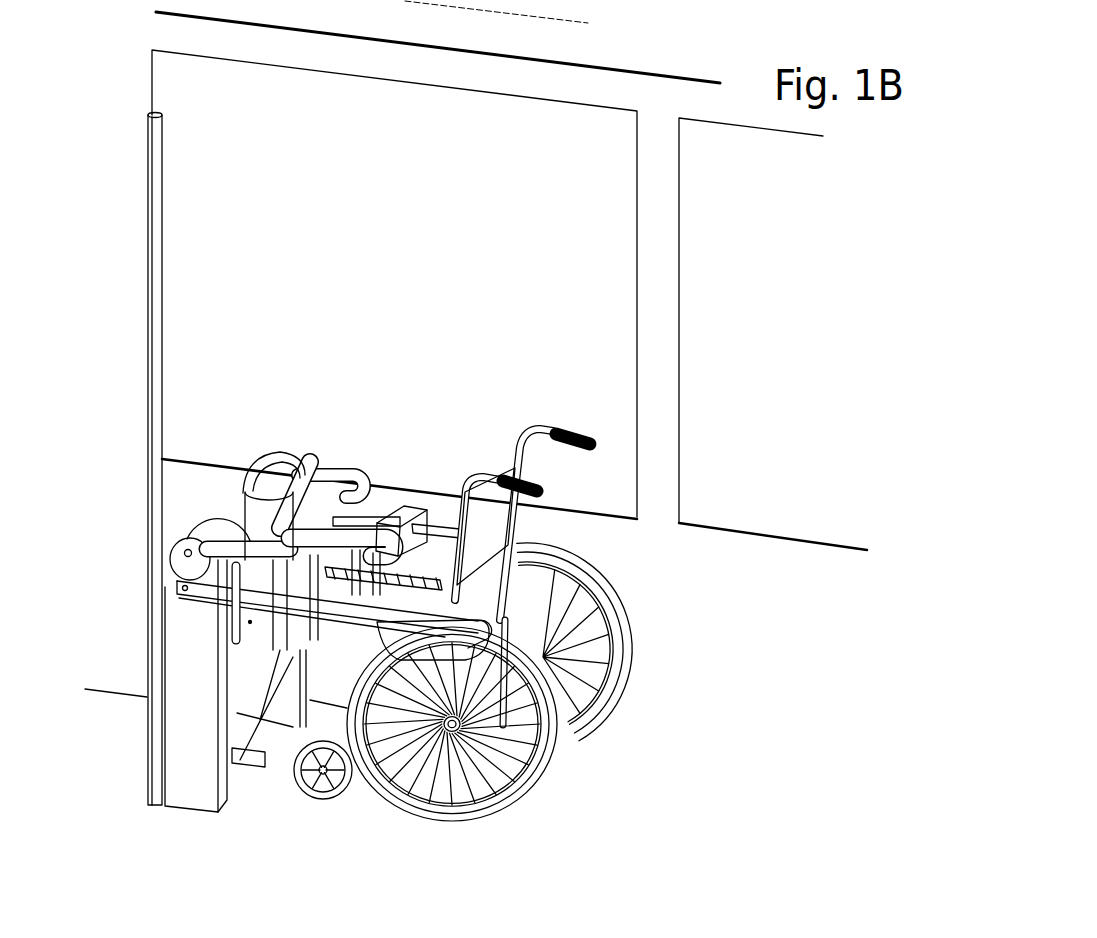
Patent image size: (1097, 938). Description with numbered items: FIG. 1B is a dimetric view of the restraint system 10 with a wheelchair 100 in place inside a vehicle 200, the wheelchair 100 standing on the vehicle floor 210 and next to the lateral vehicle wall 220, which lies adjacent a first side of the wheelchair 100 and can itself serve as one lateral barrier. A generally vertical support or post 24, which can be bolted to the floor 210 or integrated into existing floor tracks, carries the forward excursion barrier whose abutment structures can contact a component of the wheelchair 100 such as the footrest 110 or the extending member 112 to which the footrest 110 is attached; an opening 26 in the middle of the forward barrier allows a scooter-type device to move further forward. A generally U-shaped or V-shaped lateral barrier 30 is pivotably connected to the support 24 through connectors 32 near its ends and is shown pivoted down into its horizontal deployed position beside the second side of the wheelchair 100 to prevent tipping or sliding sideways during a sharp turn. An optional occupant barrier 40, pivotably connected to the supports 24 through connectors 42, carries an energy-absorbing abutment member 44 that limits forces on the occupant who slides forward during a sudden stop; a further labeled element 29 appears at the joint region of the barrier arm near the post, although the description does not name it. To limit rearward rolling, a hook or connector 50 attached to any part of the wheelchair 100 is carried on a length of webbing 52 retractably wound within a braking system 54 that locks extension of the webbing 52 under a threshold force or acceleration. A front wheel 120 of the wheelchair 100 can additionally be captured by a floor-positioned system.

The system 10 is at (278, 403).
The support or post 24 is at (243, 497).
The opening 26 is at (480, 800).
The hinge joint 29 is at (330, 517).
The lateral barrier 30 is at (460, 637).
The connector 32 is at (187, 553).
The occupant barrier 40 is at (330, 478).
The connector 42 is at (190, 550).
The abutment member 44 is at (413, 505).
The hook or connector 50 is at (420, 498).
The webbing or cable 52 is at (400, 498).
The braking system 54 is at (243, 613).
The wheelchair 100 is at (530, 615).
The footrest 110 is at (236, 770).
The extending member 112 is at (267, 698).
The front wheel 120 is at (463, 688).
The vehicle 200 is at (685, 68).
The floor 210 is at (598, 770).
The vehicle wall 220 is at (183, 492).